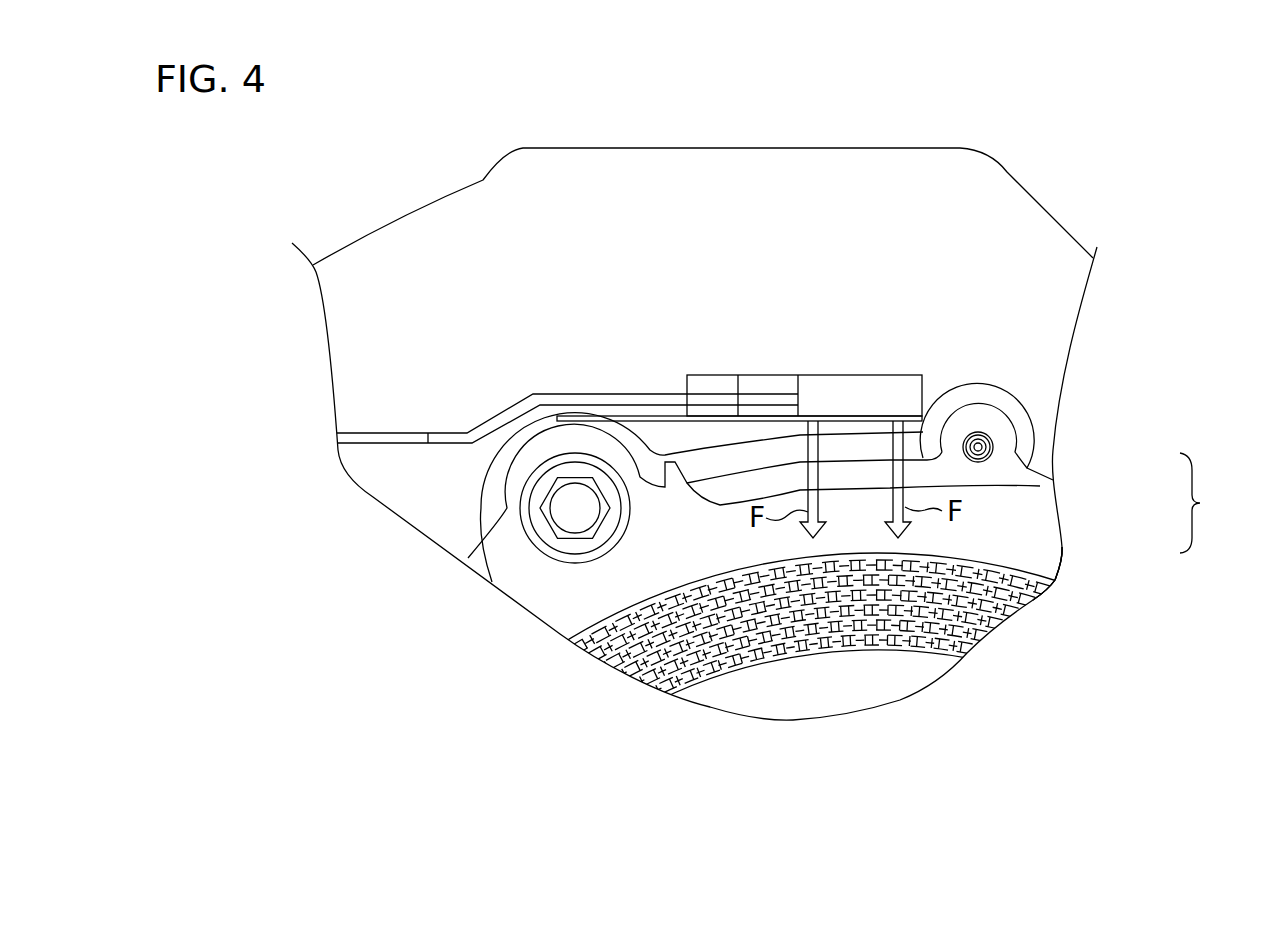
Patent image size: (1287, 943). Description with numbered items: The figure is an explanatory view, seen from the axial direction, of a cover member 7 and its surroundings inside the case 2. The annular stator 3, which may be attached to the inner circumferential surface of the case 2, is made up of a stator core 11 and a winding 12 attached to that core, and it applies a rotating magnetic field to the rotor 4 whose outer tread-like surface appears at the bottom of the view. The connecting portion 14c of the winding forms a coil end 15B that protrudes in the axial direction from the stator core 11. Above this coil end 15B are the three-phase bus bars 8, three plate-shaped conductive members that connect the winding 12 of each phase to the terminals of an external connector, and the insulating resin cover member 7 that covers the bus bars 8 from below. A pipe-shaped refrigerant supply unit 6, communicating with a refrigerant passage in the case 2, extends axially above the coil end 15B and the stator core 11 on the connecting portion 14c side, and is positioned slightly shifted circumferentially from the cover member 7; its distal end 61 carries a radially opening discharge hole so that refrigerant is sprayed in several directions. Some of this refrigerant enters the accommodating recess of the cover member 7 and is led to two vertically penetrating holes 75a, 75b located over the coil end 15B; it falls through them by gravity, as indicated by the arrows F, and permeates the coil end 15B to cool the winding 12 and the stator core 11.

The case 2 is at (1048, 165).
The stator 3 is at (1200, 503).
The rotor 4 is at (905, 648).
The refrigerant supply unit 6 is at (1003, 419).
The distal end 61 is at (993, 447).
The cover member 7 is at (880, 362).
The three-phase bus bars 8 is at (436, 417).
The stator core 11 is at (987, 518).
The winding 12 is at (990, 573).
The connecting portion 14c is at (1039, 558).
The coil end 15B is at (1047, 573).
The hole 75a is at (900, 417).
The hole 75b is at (808, 415).